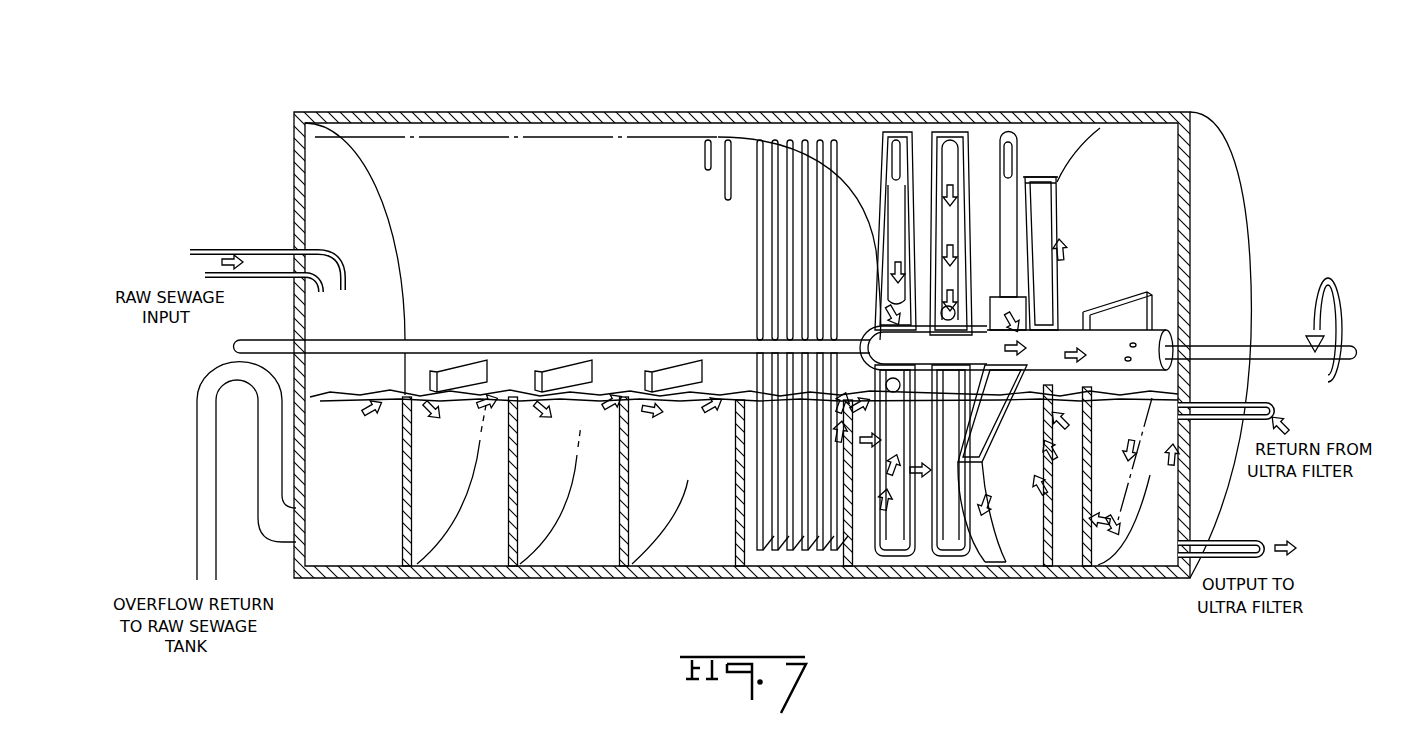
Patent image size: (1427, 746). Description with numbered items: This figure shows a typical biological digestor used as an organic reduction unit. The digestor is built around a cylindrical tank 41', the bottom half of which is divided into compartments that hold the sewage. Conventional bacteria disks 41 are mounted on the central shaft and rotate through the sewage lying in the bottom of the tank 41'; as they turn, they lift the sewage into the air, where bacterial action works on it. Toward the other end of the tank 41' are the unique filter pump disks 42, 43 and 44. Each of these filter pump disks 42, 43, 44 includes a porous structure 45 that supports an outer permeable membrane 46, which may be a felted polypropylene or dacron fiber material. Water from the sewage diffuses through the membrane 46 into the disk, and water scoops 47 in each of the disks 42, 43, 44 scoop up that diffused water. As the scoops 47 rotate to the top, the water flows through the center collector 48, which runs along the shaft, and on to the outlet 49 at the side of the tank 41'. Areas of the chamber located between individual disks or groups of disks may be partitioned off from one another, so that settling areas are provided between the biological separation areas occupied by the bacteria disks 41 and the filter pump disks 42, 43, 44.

The bacteria disks 41 is at (593, 313).
The cylindrical tank 41' is at (731, 363).
The filter pump disk 42 is at (920, 135).
The filter pump disk 43 is at (950, 130).
The filter pump disk 44 is at (1060, 190).
The porous structure 45 is at (1033, 174).
The permeable membrane 46 is at (1028, 140).
The water scoops 47 is at (1012, 140).
The center collector 48 is at (1100, 332).
The outlet 49 is at (1236, 541).